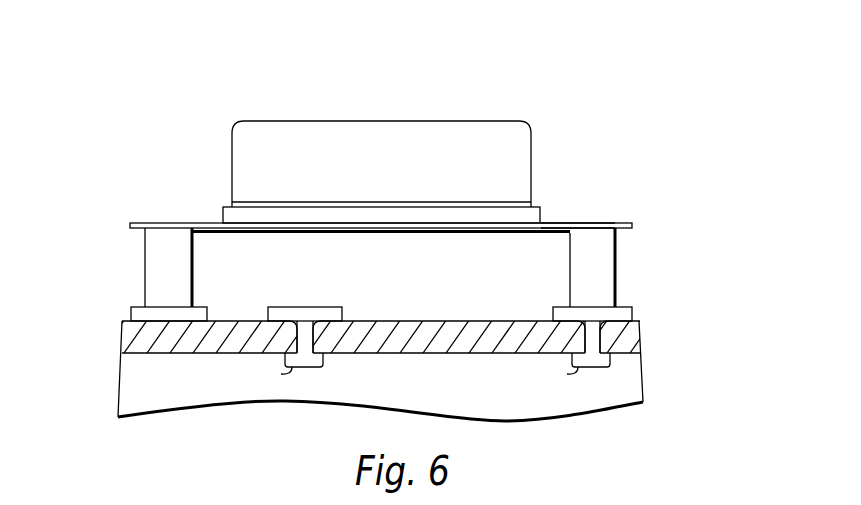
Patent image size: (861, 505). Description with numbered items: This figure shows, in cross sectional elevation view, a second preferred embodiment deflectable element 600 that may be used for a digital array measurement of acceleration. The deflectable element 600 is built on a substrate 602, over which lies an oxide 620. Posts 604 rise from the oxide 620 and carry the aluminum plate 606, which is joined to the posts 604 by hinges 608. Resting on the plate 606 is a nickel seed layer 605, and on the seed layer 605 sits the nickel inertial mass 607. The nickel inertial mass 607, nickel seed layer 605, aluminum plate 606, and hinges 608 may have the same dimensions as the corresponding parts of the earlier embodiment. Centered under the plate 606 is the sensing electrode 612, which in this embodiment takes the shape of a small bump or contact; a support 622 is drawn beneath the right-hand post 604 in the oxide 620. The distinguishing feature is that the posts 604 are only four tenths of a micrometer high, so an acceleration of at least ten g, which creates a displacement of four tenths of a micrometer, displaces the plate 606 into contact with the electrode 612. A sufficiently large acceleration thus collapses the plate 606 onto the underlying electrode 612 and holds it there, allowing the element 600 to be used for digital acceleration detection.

The deflectable element 600 is at (202, 93).
The P-silicon substrate 602 is at (211, 397).
The posts 604 is at (618, 280).
The nickel seed layer 605 is at (224, 203).
The aluminum plate 606 is at (542, 222).
The nickel inertial mass 607 is at (231, 157).
The hinges 608 is at (600, 223).
The sensing electrode 612 is at (317, 306).
The oxide layer 620 is at (231, 318).
The support 622 is at (553, 307).